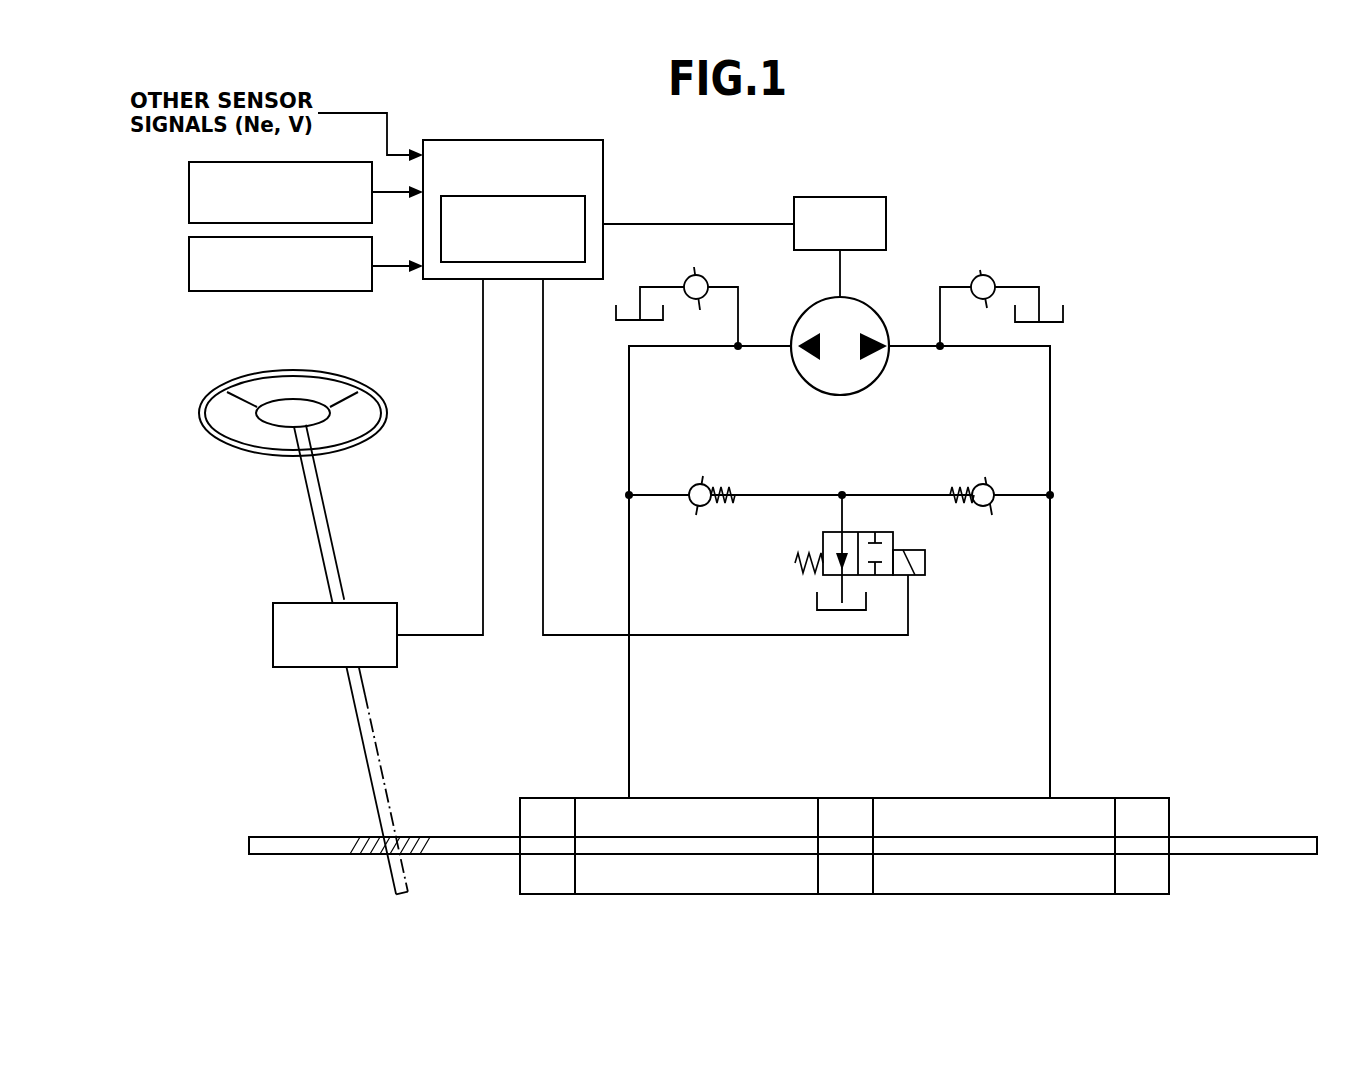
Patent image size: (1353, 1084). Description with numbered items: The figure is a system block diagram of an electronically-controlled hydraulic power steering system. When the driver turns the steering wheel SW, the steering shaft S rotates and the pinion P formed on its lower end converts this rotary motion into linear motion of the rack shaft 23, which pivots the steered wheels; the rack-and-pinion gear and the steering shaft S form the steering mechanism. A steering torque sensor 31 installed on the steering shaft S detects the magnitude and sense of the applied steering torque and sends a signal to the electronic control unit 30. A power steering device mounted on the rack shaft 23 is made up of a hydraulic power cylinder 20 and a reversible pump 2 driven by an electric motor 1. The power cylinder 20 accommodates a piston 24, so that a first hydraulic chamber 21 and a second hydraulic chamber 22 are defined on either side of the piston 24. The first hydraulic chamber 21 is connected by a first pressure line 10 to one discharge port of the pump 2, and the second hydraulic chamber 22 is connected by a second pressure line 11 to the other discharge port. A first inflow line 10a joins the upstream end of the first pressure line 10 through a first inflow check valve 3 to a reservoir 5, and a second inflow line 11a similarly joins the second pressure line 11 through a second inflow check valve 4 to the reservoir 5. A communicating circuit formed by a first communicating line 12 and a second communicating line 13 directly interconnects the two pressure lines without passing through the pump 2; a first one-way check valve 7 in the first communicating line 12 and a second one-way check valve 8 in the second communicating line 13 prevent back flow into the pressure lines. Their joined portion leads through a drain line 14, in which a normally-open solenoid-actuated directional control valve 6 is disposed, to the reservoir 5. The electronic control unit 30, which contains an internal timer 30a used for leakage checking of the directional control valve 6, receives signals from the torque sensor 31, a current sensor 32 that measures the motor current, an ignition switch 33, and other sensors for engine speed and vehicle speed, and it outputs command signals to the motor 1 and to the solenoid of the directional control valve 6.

The electric motor 1 is at (843, 197).
The reversible pump 2 is at (873, 383).
The first inflow check valve 3 is at (988, 270).
The second inflow check valve 4 is at (690, 270).
The reservoir 5 is at (616, 314).
The directional control valve 6 is at (884, 530).
The first one-way check valve 7 is at (985, 508).
The second one-way check valve 8 is at (700, 508).
The first pressure line 10 is at (1050, 418).
The first inflow line 10a is at (952, 287).
The second pressure line 11 is at (629, 392).
The second inflow line 11a is at (727, 287).
The first communicating line 12 is at (1013, 495).
The second communicating line 13 is at (666, 495).
The drain line 14 is at (840, 583).
The hydraulic power cylinder 20 is at (1093, 798).
The first hydraulic chamber 21 is at (1032, 880).
The second hydraulic chamber 22 is at (695, 880).
The rack shaft 23 is at (1255, 838).
The piston 24 is at (850, 880).
The electronic control unit 30 is at (546, 140).
The internal timer 30a is at (453, 262).
The steering torque sensor 31 is at (273, 632).
The current sensor 32 is at (189, 192).
The ignition switch 33 is at (189, 268).
The steering wheel SW is at (198, 412).
The steering shaft S is at (307, 515).
The pinion P is at (395, 838).